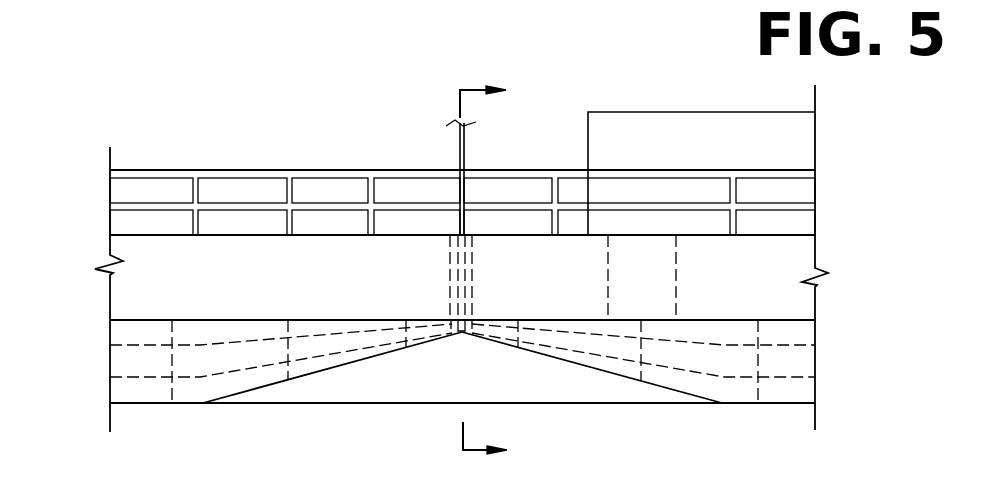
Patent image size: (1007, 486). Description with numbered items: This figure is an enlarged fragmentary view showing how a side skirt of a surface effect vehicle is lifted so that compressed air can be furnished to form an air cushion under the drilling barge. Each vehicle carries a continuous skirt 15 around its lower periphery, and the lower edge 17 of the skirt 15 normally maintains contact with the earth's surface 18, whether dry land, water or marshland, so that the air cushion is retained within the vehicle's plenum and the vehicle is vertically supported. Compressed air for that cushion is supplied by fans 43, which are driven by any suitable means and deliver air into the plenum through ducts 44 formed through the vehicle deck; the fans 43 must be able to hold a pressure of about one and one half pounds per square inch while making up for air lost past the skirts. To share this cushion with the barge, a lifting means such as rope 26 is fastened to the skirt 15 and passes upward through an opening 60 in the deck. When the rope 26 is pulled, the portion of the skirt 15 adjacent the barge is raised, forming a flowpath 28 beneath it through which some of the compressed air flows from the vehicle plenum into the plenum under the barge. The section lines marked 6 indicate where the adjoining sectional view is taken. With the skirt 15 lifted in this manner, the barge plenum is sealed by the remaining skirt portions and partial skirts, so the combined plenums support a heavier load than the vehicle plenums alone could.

The skirt 15 is at (142, 360).
The lower edge of skirt 17 is at (185, 403).
The earth's surface 18 is at (466, 403).
The rope 26 is at (458, 150).
The flowpath 28 is at (485, 372).
The fan 43 is at (688, 112).
The duct 44 is at (676, 290).
The opening 60 is at (449, 268).
The section line 6- 6 is at (483, 270).